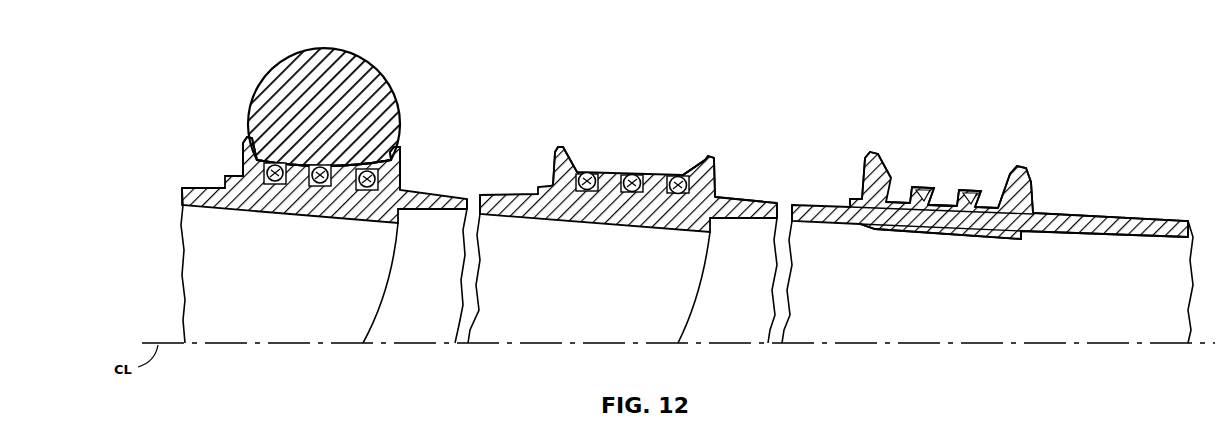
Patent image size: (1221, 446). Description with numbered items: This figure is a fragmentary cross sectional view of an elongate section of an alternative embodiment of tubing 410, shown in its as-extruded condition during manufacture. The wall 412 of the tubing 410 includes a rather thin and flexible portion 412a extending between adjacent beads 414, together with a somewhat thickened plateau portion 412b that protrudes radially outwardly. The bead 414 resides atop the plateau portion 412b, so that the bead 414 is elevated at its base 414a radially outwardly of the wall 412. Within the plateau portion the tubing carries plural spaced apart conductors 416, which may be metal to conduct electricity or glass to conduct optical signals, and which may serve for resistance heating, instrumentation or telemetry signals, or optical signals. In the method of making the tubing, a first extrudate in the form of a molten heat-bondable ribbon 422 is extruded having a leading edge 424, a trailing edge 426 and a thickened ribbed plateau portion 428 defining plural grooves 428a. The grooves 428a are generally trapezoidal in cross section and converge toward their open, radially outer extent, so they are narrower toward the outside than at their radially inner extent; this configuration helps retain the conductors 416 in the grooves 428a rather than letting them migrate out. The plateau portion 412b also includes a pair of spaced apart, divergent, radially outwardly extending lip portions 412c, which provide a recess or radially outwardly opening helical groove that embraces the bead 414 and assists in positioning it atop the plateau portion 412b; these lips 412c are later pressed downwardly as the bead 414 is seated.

The tubing 410 is at (663, 128).
The wall 412 is at (1098, 210).
The thin and flexible portion 412a is at (753, 197).
The plateau portion 412b is at (687, 163).
The lip portions 412c is at (242, 138).
The bead 414 is at (391, 80).
The base 414a is at (402, 160).
The conductors 416 is at (360, 187).
The heat-bondable ribbon 422 is at (1145, 208).
The leading edge 424 is at (852, 200).
The trailing edge 426 is at (1023, 237).
The ribbed plateau portion 428 is at (994, 163).
The grooves 428a is at (940, 216).